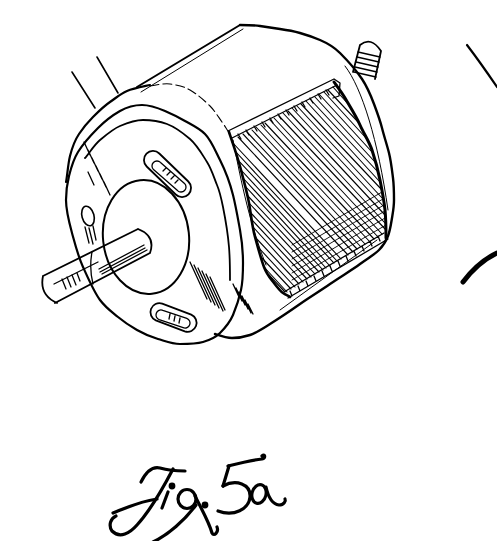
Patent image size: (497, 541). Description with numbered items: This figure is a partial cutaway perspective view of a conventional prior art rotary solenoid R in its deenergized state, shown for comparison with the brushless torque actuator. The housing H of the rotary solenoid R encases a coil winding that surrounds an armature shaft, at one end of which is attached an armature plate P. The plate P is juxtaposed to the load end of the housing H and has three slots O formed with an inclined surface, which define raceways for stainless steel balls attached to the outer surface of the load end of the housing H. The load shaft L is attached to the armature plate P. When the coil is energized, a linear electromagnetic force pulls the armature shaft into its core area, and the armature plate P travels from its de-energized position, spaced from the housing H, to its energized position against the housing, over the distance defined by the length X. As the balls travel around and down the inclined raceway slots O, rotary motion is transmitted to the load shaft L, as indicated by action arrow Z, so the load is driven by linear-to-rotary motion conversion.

The length X is at (109, 72).
The housing H is at (235, 82).
The armature plate P is at (97, 180).
The load shaft L is at (82, 280).
The slots O is at (186, 326).
The rotary solenoid R is at (355, 33).
The action arrow Z is at (496, 320).